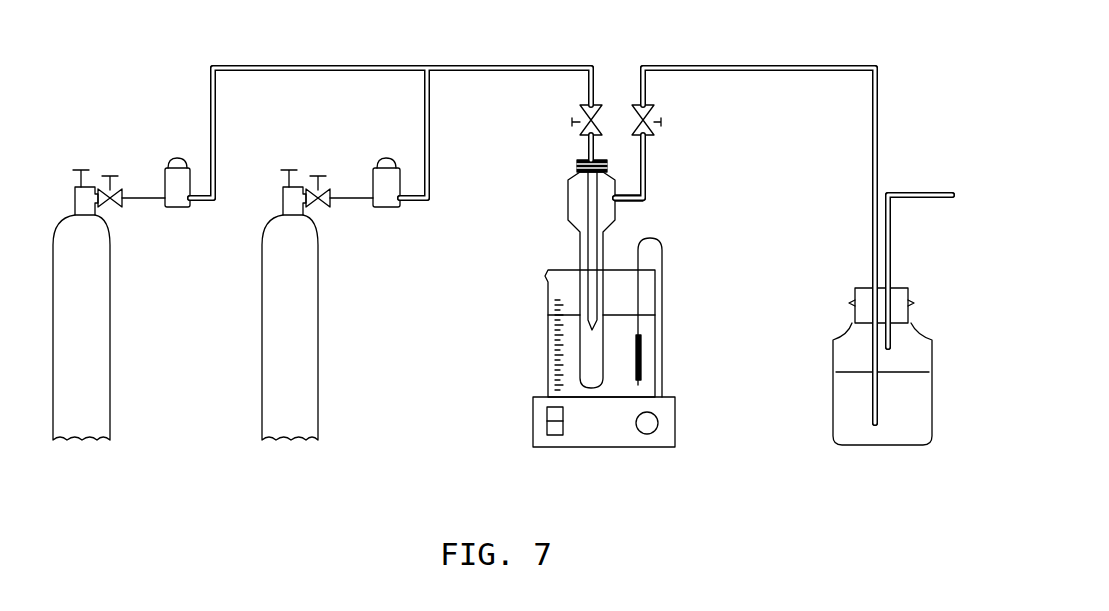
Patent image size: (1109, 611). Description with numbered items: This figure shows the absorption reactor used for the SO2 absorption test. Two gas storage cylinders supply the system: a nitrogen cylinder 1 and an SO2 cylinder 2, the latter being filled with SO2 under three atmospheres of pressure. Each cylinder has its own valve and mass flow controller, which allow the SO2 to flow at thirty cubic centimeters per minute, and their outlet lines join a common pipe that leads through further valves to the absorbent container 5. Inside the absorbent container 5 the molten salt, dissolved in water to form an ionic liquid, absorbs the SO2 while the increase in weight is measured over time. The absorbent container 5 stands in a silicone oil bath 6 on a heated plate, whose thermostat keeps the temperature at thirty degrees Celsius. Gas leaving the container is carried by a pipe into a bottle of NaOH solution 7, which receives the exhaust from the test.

The nitrogen cylinder 1 is at (100, 347).
The SO2 cylinder 2 is at (308, 347).
The absorbent container 5 is at (563, 217).
The silicone oil bath 6 is at (567, 347).
The NaOH solution 7 is at (840, 408).